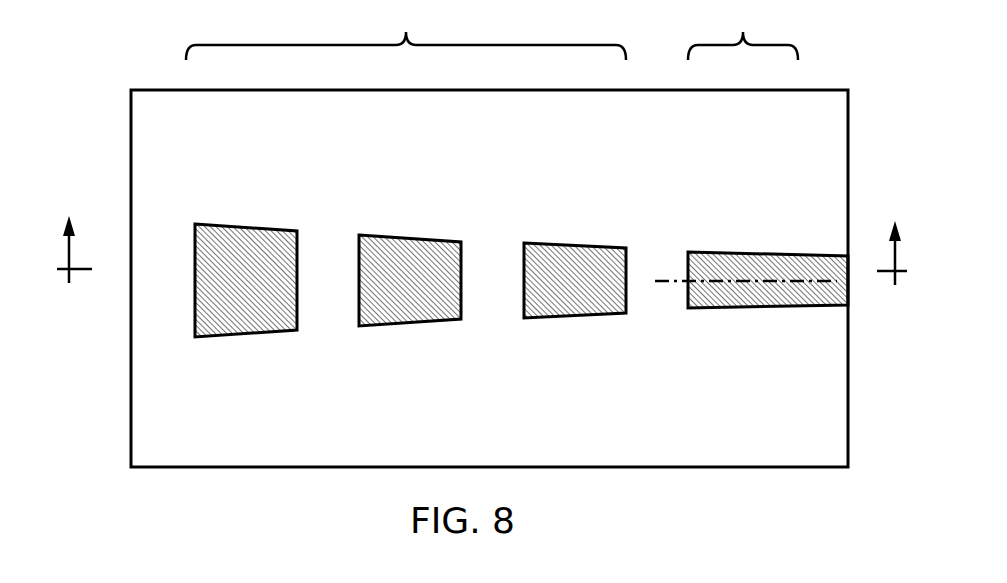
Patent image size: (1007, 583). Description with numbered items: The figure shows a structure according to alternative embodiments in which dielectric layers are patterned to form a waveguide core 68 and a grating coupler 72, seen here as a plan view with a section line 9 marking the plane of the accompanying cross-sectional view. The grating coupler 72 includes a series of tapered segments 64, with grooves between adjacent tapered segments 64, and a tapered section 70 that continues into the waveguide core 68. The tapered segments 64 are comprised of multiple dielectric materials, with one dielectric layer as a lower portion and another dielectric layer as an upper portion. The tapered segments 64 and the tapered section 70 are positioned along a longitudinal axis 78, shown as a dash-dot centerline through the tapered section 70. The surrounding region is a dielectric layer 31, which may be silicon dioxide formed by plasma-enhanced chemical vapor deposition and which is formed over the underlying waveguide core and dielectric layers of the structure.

The section line 9 is at (482, 231).
The dielectric layer 31 is at (784, 430).
The tapered segments 64 is at (252, 264).
The waveguide core 68 is at (745, 296).
The tapered section 70 is at (743, 32).
The grating coupler 72 is at (406, 32).
The longitudinal axis 78 is at (802, 281).